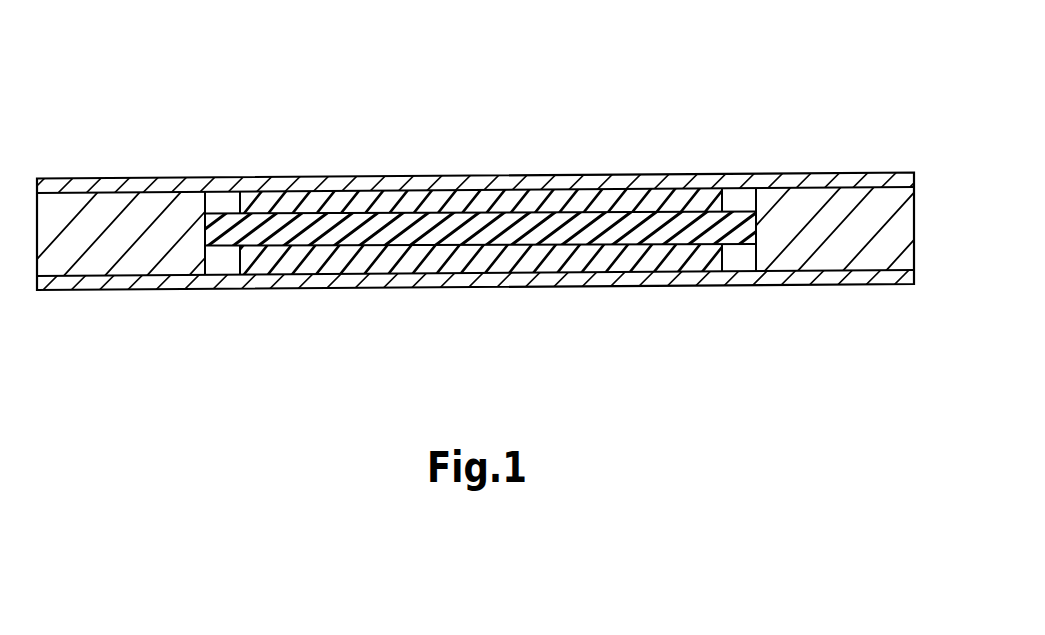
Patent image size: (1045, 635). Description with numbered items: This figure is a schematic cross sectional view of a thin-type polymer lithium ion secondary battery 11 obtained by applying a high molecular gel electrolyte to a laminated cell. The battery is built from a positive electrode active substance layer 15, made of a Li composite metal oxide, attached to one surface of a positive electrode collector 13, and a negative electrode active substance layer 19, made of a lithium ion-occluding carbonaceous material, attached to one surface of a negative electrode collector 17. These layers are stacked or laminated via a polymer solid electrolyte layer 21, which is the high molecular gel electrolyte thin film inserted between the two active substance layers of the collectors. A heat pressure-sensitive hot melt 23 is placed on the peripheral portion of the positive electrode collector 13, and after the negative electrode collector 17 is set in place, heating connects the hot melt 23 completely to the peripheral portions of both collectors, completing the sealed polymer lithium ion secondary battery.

The lithium secondary battery 11 is at (660, 102).
The positive electrode collector 13 is at (392, 279).
The positive electrode active substance layer 15 is at (533, 262).
The negative electrode collector 17 is at (688, 174).
The negative electrode active substance layer 19 is at (403, 202).
The polymer solid electrolyte layer 21 is at (263, 228).
The hot melt 23 is at (153, 204).